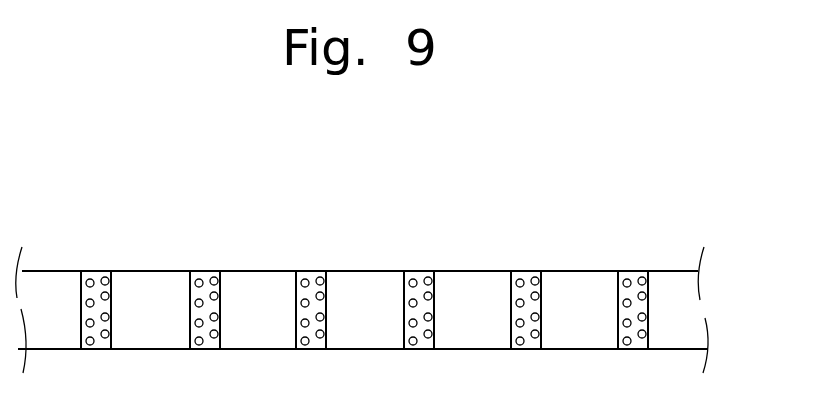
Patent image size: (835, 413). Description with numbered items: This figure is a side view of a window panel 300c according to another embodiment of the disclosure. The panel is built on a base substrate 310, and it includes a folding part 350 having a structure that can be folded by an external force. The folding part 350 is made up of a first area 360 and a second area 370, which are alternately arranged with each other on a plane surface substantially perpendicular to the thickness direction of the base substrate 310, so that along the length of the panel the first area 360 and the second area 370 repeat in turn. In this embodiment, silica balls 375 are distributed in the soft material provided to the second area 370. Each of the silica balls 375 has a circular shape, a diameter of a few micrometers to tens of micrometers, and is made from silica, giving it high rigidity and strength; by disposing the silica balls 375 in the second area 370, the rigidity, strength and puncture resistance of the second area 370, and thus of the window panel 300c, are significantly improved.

The window panel 300c is at (585, 183).
The base substrate 310 is at (681, 309).
The folding part 350 is at (657, 263).
The first area 360 is at (113, 268).
The second area 370 is at (220, 268).
The silica balls 375 is at (427, 278).